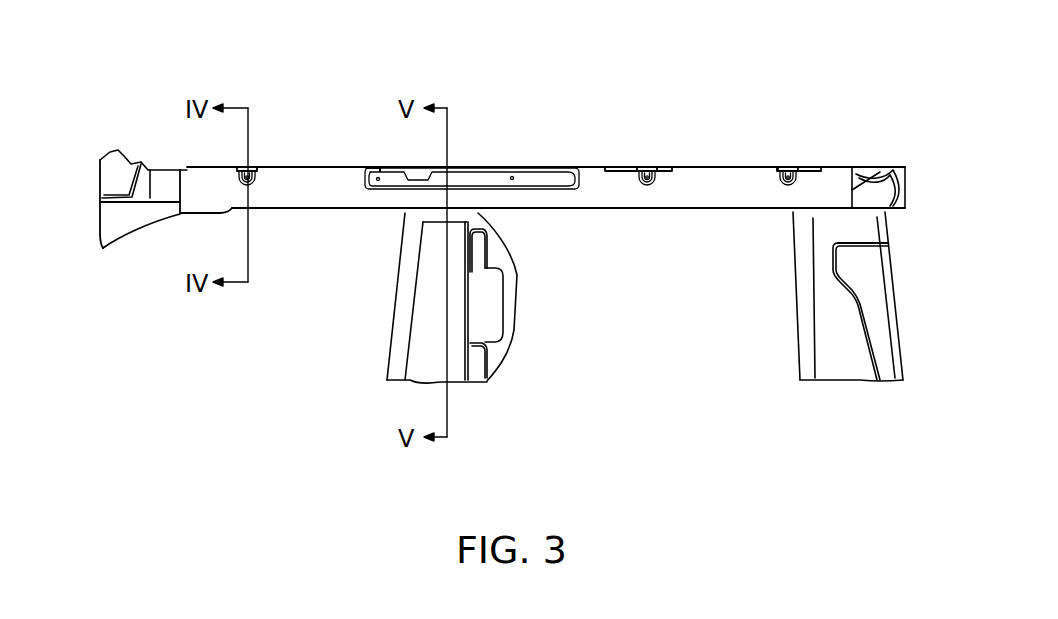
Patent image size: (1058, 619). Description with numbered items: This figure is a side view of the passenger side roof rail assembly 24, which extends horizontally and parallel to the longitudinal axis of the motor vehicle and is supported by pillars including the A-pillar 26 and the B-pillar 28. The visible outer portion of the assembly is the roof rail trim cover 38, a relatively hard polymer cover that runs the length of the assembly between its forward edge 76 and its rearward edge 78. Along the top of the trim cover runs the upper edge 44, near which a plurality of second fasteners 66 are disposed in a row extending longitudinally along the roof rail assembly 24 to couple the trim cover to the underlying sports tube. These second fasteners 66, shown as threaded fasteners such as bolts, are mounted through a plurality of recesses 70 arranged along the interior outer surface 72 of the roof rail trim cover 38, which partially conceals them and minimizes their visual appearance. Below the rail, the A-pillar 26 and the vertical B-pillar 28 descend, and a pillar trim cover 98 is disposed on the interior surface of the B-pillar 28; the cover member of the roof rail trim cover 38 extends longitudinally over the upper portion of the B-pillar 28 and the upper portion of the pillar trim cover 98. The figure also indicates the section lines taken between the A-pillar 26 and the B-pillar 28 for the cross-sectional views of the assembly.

The passenger side roof rail assembly 24 is at (589, 167).
The A-pillar 26 is at (407, 335).
The B-pillar 28 is at (873, 308).
The roof rail trim cover 38 is at (708, 200).
The upper edge 44 is at (698, 170).
The second fasteners 66 is at (255, 178).
The recesses 70 is at (246, 178).
The interior outer surface 72 is at (520, 197).
The forward edge 76 is at (118, 201).
The rearward edge 78 is at (853, 187).
The pillar trim cover 98 is at (457, 357).